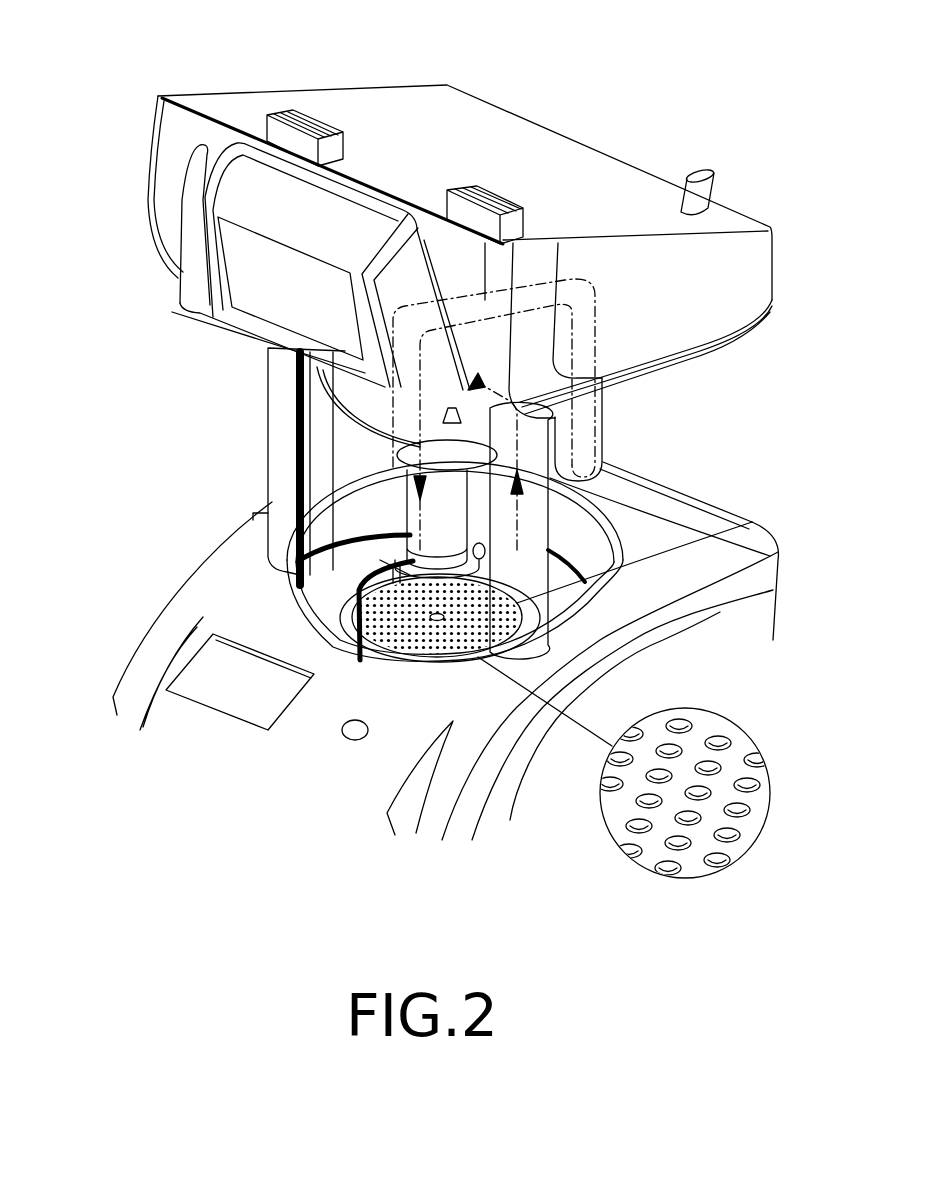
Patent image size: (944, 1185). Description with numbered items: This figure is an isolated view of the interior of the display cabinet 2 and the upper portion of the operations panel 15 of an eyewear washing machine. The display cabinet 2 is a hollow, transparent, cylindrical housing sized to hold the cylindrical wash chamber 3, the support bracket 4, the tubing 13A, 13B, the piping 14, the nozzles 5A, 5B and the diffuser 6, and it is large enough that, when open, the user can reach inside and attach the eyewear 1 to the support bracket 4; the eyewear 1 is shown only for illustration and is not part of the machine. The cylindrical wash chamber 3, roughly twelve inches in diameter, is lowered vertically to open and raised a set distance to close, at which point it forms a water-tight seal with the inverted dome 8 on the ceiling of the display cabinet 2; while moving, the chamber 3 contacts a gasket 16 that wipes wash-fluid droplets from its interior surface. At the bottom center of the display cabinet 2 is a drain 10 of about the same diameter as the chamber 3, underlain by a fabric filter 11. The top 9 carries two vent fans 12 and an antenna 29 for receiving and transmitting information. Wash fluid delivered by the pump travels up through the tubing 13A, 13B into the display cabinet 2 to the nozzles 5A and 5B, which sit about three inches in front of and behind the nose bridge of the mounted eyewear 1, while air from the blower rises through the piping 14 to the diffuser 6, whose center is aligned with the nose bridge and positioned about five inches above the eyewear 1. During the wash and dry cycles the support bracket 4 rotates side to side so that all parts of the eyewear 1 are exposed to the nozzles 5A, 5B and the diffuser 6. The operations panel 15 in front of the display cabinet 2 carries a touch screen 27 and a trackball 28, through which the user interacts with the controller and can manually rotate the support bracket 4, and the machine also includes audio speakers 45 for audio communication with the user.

The eyewear 1 is at (405, 560).
The display cabinet 2 is at (605, 462).
The cylindrical wash chamber 3 is at (352, 578).
The support bracket 4 is at (548, 530).
The nozzle 5A is at (340, 627).
The nozzle 5B is at (410, 505).
The diffuser 6 is at (415, 472).
The inverted dome 8 is at (345, 403).
The top 9 is at (165, 226).
The drain 10 is at (560, 612).
The fabric filter 11 is at (718, 760).
The vent fans 12 is at (497, 195).
The tubing 13A is at (340, 647).
The tubing 13B is at (545, 605).
The piping 14 is at (600, 438).
The operations panel 15 is at (153, 693).
The gasket 16 is at (447, 663).
The touch screen 27 is at (227, 710).
The trackball 28 is at (342, 735).
The antenna 29 is at (703, 187).
The audio speakers 45 is at (598, 373).